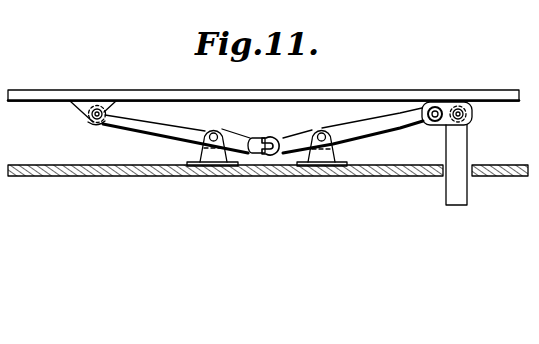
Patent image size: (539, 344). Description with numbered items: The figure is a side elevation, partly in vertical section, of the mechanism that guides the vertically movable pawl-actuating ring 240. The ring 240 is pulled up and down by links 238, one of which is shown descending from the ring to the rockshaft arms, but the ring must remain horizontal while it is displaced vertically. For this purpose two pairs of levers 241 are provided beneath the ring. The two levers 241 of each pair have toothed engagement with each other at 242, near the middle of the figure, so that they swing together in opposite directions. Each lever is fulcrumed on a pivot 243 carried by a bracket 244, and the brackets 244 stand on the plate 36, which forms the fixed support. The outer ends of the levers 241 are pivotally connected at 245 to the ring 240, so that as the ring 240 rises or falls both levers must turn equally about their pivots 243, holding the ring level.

The plate 36 is at (107, 176).
The link 238 is at (468, 148).
The pawl-actuating ring 240 is at (398, 86).
The lever 241 is at (158, 123).
The toothed engagement 242 is at (267, 138).
The pivot 243 is at (214, 133).
The bracket 244 is at (212, 167).
The pivotal connection 245 is at (91, 123).